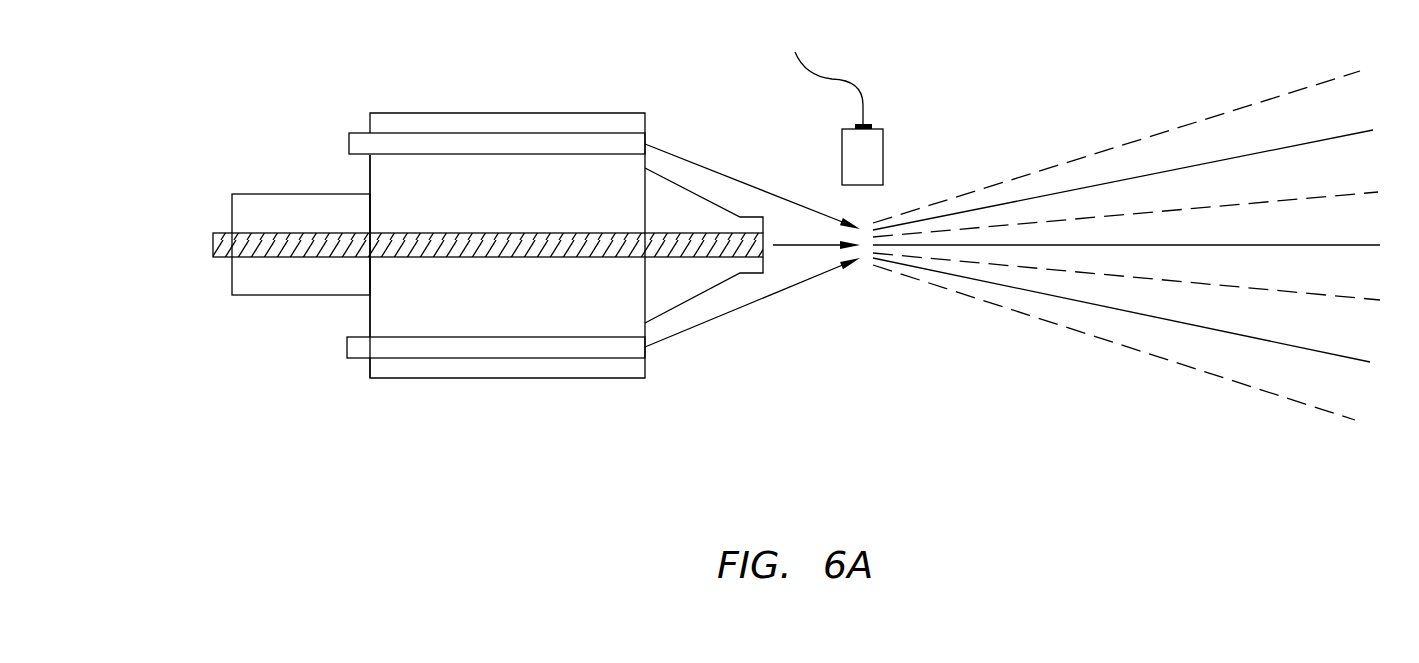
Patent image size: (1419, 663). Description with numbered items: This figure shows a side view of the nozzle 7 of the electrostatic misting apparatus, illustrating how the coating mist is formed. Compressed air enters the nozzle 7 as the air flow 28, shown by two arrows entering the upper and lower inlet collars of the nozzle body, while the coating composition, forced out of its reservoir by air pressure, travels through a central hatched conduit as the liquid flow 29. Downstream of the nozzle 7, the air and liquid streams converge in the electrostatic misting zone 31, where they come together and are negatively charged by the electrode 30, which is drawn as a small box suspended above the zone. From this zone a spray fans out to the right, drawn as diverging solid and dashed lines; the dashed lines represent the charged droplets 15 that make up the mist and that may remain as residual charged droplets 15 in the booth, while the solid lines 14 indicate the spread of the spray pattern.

The nozzle 7 is at (446, 113).
The laser beam 14 is at (1143, 240).
The residual charged droplets 15 is at (1132, 257).
The air flow 28 is at (284, 143).
The liquid flow 29 is at (180, 245).
The electrode 30 is at (883, 150).
The electrostatic misting zone 31 is at (788, 290).